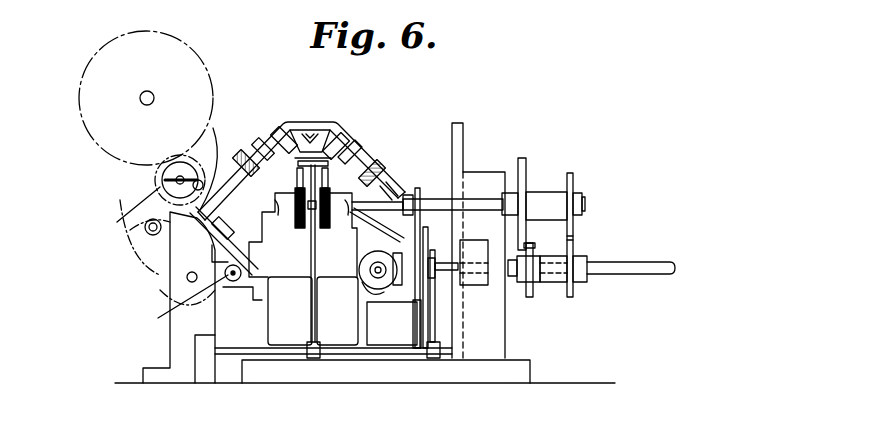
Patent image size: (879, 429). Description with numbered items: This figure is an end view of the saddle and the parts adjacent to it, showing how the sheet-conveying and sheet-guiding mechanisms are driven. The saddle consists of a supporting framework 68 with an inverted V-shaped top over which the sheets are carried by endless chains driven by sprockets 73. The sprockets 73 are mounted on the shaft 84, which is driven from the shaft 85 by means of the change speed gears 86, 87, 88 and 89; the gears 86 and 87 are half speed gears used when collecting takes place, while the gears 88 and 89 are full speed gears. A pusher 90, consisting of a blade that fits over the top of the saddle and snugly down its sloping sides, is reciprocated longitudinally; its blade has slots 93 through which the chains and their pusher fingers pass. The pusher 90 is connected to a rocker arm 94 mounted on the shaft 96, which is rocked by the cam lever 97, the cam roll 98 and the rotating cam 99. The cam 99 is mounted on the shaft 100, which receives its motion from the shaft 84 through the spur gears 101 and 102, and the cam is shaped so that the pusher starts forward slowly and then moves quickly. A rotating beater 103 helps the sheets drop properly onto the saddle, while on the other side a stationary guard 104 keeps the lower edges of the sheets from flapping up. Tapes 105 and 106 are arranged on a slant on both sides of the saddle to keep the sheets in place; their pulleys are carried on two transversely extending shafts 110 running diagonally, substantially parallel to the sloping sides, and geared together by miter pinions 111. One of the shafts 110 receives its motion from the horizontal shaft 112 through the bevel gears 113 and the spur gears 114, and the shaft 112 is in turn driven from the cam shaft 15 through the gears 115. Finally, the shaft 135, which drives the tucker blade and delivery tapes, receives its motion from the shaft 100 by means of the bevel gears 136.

The cam shaft 15 is at (146, 98).
The supporting framework 68 is at (290, 311).
The sprockets 73 is at (308, 226).
The shaft 84 is at (467, 207).
The shaft 85 is at (608, 266).
The change speed gear 86 is at (528, 176).
The change speed gear 87 is at (531, 294).
The change speed gear 88 is at (576, 178).
The change speed gear 89 is at (574, 293).
The pusher 90 is at (293, 190).
The slots 93 is at (294, 158).
The rocker arm 94 is at (315, 297).
The shaft 96 is at (333, 352).
The cam lever 97 is at (437, 322).
The cam roll 98 is at (428, 303).
The rotating cam 99 is at (428, 238).
The shaft 100 is at (445, 278).
The spur gear 101 is at (420, 322).
The spur gear 102 is at (416, 192).
The rotating beater 103 is at (204, 177).
The guard 104 is at (365, 236).
The tapes 105 is at (240, 158).
The tapes 106 is at (383, 177).
The transversely extending shafts 110 is at (341, 151).
The miter pinions 111 is at (310, 136).
The horizontal shaft 112 is at (173, 305).
The bevel gears 113 is at (237, 283).
The spur gears 114 is at (227, 255).
The gears 115 is at (133, 233).
The shaft 135 is at (368, 288).
The bevel gears 136 is at (337, 311).